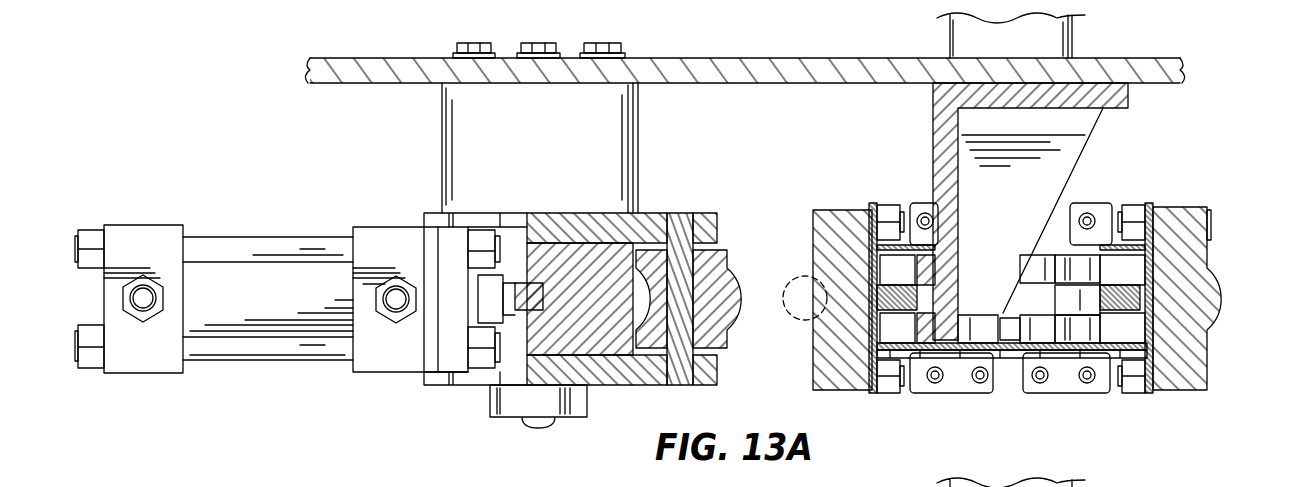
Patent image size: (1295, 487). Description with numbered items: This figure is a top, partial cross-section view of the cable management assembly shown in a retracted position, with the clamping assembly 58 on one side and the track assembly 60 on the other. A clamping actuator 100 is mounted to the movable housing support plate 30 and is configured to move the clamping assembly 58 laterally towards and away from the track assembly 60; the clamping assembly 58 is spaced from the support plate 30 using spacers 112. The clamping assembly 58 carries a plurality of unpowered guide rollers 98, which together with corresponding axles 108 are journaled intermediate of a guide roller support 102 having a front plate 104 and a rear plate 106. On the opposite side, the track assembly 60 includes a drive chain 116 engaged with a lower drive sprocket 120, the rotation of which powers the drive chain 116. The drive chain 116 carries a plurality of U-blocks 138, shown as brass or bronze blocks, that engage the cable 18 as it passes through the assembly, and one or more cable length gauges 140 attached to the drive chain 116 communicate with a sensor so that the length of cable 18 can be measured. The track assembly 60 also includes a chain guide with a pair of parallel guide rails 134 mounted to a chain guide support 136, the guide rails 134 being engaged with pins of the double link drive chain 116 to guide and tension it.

The cable 18 is at (800, 290).
The movable housing support plate 30 is at (1168, 101).
The clamping assembly 58 is at (320, 158).
The track assembly 60 is at (1180, 143).
The guide rollers 98 is at (722, 248).
The clamping actuator 100 is at (228, 282).
The guide roller support 102 is at (603, 330).
The front plate 104 is at (556, 367).
The rear plate 106 is at (653, 222).
The axles 108 is at (728, 302).
The spacers 112 is at (480, 135).
The drive chain 116 is at (1123, 332).
The lower drive sprocket 120 is at (1027, 340).
The guide rails 134 is at (915, 328).
The chain guide support 136 is at (943, 152).
The U-blocks 138 is at (1197, 367).
The cable length gauges 140 is at (1209, 222).